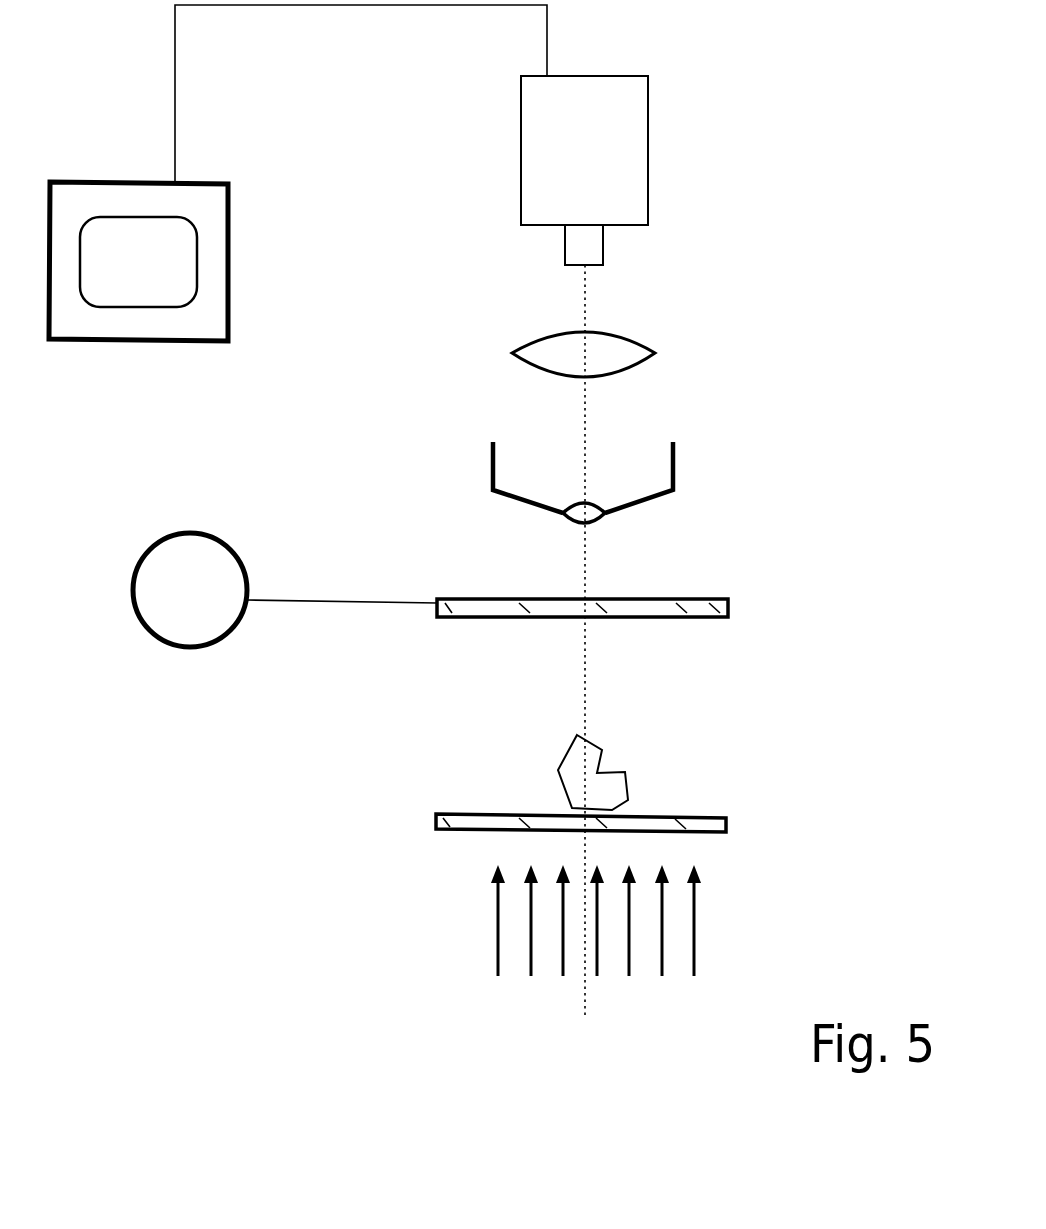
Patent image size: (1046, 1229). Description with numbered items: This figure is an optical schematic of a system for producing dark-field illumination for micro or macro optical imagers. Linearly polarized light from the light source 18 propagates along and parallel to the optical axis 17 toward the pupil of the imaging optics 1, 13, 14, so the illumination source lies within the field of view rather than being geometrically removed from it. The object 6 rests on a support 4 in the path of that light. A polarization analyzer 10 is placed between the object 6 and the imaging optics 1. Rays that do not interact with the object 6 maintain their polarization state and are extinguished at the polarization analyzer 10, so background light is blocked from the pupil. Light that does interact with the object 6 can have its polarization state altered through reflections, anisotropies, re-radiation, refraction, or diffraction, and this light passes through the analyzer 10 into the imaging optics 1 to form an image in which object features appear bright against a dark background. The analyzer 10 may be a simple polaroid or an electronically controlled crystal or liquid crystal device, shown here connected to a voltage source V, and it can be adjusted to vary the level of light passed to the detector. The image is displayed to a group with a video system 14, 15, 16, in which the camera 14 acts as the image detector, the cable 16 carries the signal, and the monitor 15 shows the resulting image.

The imaging optics 1 is at (667, 475).
The support 4 is at (734, 819).
The object 6 is at (620, 797).
The polarization analyzer 10 is at (718, 602).
The imaging optics 13 is at (635, 345).
The video system camera 14 is at (638, 137).
The video system monitor 15 is at (213, 317).
The video system cable 16 is at (176, 100).
The optical axis 17 is at (589, 688).
The light source 18 is at (513, 928).
The voltage source V is at (155, 562).